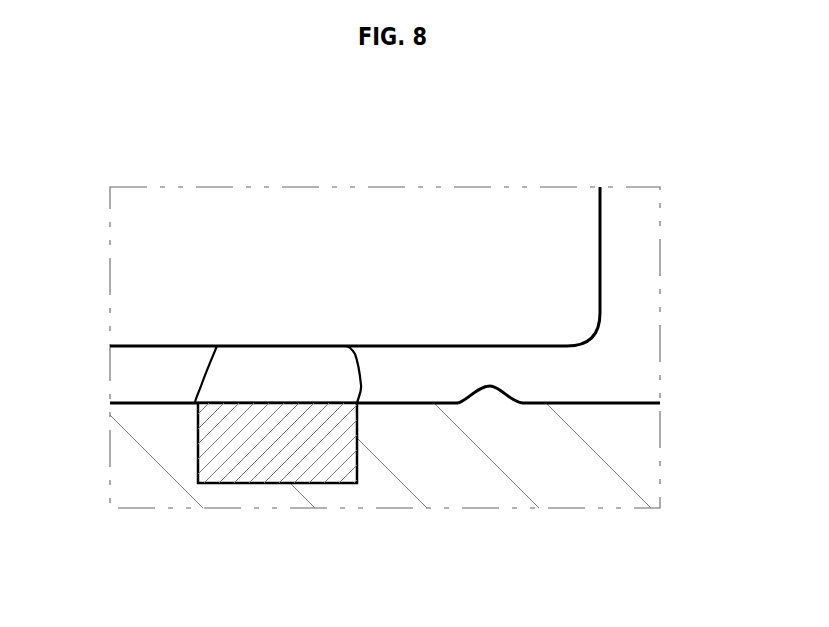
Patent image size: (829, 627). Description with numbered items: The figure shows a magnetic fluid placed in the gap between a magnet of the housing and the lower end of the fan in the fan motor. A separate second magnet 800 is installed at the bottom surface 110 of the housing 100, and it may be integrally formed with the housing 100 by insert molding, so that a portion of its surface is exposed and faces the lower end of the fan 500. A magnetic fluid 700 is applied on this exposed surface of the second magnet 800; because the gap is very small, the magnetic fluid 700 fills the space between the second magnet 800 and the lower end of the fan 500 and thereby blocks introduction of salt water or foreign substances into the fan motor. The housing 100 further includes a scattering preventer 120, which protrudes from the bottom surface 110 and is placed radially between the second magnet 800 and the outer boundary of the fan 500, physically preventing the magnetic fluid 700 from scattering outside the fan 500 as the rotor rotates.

The housing 100 is at (152, 480).
The bottom surface 110 is at (630, 403).
The scattering preventer 120 is at (498, 400).
The fan 500 is at (429, 226).
The magnetic fluid 700 is at (228, 372).
The second magnet 800 is at (218, 440).